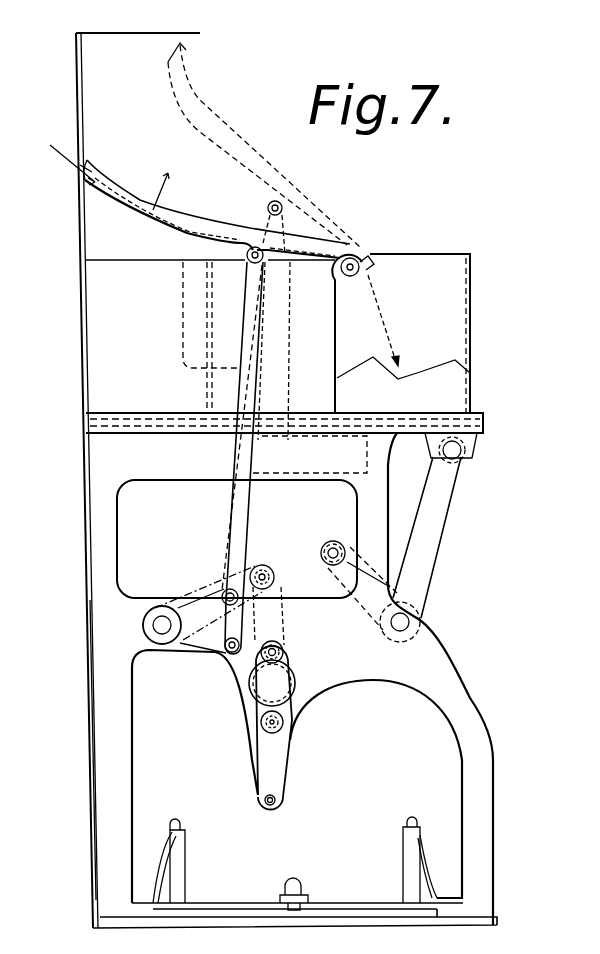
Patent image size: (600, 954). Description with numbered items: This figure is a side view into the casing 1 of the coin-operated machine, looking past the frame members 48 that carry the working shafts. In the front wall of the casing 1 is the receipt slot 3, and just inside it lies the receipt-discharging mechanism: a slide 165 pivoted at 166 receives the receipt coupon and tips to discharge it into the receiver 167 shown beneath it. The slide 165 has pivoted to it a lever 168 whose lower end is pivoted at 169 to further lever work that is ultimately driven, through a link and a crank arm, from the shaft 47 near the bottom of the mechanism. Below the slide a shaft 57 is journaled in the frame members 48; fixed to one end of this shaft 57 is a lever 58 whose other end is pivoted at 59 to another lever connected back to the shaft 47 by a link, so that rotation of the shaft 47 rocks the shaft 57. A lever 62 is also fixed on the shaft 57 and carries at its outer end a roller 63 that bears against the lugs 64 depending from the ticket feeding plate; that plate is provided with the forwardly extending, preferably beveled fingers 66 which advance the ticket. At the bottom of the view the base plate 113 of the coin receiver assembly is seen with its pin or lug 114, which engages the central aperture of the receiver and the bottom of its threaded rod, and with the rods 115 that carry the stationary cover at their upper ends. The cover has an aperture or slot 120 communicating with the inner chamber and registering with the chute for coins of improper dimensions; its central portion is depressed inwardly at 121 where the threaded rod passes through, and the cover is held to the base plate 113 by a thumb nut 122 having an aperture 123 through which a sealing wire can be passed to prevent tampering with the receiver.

The casing 1 is at (79, 383).
The receipt slot 3 is at (80, 173).
The shaft 47 is at (287, 683).
The frame members 48 is at (89, 766).
The shaft 57 is at (401, 622).
The lever 58 is at (362, 603).
The pivot 59 is at (333, 552).
The lever 62 is at (424, 538).
The roller 63 is at (456, 454).
The lugs 64 is at (470, 450).
The fingers 66 is at (306, 484).
The base plate 113 is at (148, 919).
The pin or lug 114 is at (295, 879).
The rods 115 is at (178, 858).
The aperture or slot 120 is at (197, 643).
The depressed portion 121 is at (160, 625).
The thumb nut 122 is at (288, 702).
The aperture 123 is at (284, 716).
The slide 165 is at (163, 224).
The pivot 166 is at (356, 257).
The receiver 167 is at (298, 204).
The lever 168 is at (240, 455).
The pivot 169 is at (232, 652).